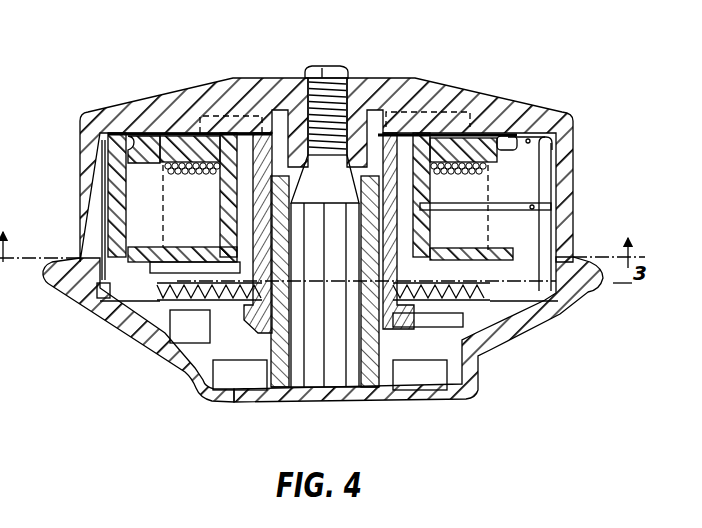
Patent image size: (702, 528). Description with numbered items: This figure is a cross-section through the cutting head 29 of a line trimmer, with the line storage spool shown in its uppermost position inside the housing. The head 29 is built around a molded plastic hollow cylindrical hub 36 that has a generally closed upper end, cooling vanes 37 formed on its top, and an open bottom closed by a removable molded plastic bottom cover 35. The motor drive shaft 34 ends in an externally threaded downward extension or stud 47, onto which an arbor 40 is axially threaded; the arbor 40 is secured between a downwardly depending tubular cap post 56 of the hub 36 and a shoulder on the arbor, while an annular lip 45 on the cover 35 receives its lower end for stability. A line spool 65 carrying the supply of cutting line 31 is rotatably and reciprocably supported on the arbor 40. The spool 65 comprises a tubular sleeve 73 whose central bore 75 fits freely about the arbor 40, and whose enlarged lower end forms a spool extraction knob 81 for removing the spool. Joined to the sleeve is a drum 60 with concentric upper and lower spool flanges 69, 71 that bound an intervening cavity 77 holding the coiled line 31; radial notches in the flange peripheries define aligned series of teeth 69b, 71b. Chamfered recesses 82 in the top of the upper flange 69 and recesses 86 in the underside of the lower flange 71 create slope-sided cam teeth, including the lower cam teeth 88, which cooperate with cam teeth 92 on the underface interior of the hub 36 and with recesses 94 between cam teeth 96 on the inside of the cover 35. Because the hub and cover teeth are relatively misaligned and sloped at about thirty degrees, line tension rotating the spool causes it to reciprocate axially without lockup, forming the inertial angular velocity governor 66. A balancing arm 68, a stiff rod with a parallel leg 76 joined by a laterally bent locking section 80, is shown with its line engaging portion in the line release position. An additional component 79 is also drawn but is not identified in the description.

The head 29 is at (72, 181).
The cutting line 31 is at (196, 174).
The drive shaft 34 is at (321, 70).
The bottom cover 35 is at (95, 340).
The hub 36 is at (168, 133).
The cooling vanes 37 is at (421, 80).
The arbor 40 is at (377, 345).
The annular lip 45 is at (404, 385).
The stud 47 is at (341, 93).
The tubular cap post 56 is at (282, 147).
The drum 60 is at (420, 215).
The line spool 65 is at (142, 234).
The inertial angular velocity governor 66 is at (480, 138).
The balancing arm 68 is at (560, 186).
The upper spool flange 69 is at (190, 195).
The teeth 69b is at (135, 155).
The lower spool flange 71 is at (205, 248).
The teeth 71b is at (133, 266).
The tubular sleeve 73 is at (266, 236).
The central bore 75 is at (380, 230).
The leg 76 is at (545, 239).
The cavity 77 is at (156, 215).
The inner sleeve 79 is at (248, 145).
The locking section 80 is at (525, 133).
The spool extraction knob 81 is at (247, 333).
The chamfered recesses 82 is at (200, 140).
The recesses 86 is at (477, 248).
The cam teeth 88 is at (175, 330).
The cam teeth 92 is at (150, 105).
The recesses 94 is at (280, 280).
The cam teeth 96 is at (290, 300).